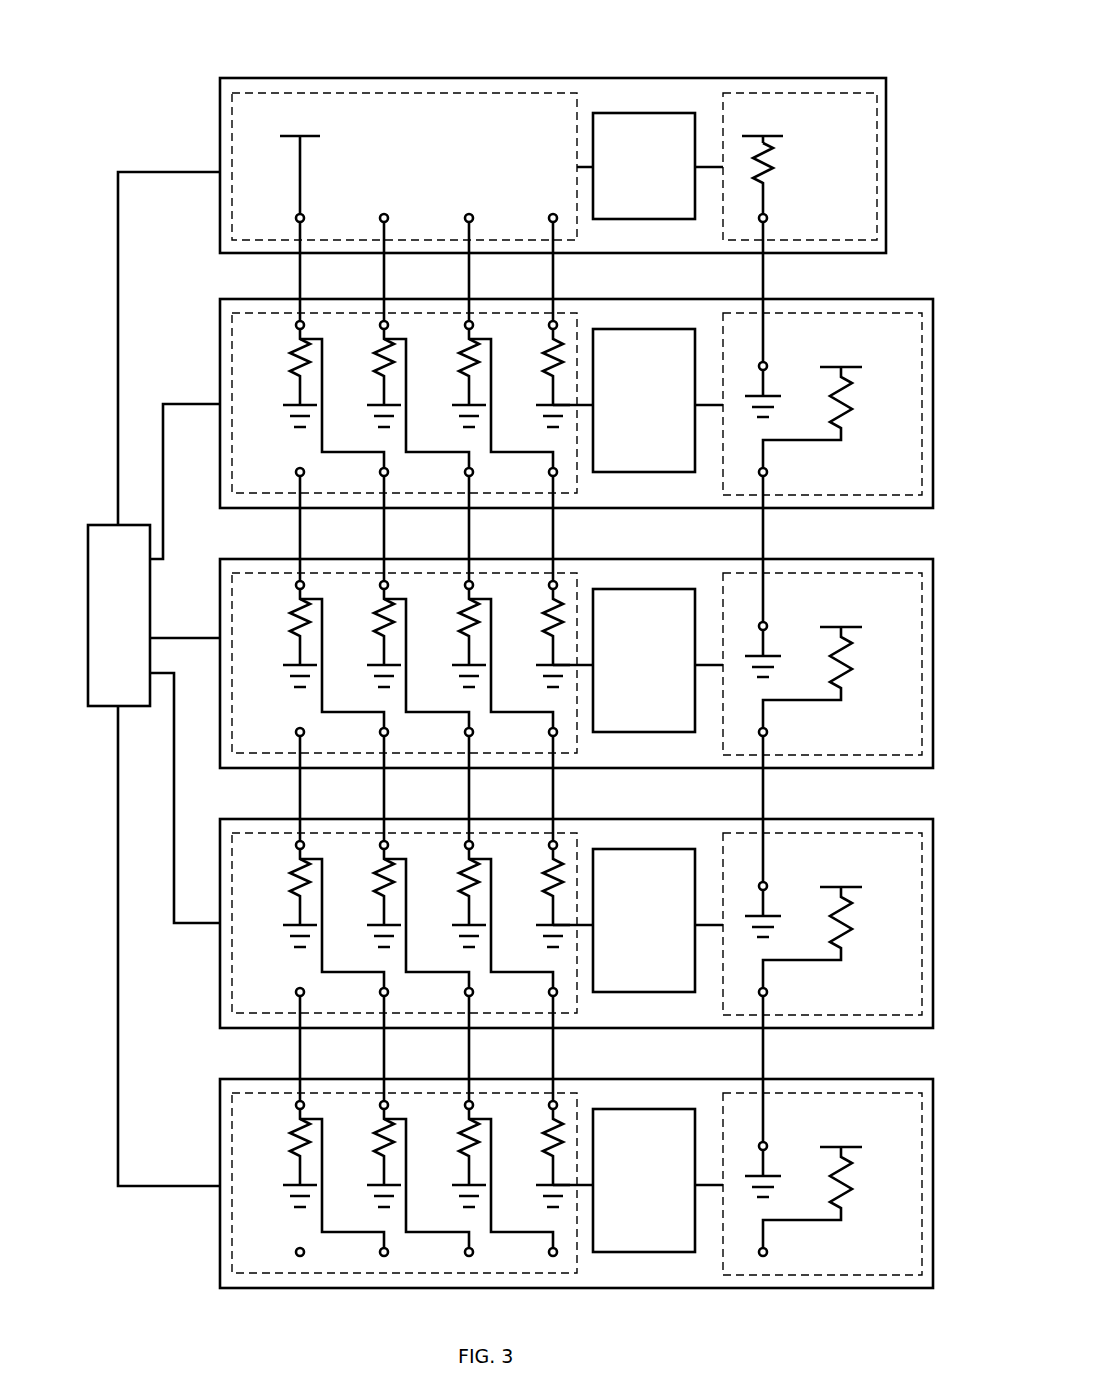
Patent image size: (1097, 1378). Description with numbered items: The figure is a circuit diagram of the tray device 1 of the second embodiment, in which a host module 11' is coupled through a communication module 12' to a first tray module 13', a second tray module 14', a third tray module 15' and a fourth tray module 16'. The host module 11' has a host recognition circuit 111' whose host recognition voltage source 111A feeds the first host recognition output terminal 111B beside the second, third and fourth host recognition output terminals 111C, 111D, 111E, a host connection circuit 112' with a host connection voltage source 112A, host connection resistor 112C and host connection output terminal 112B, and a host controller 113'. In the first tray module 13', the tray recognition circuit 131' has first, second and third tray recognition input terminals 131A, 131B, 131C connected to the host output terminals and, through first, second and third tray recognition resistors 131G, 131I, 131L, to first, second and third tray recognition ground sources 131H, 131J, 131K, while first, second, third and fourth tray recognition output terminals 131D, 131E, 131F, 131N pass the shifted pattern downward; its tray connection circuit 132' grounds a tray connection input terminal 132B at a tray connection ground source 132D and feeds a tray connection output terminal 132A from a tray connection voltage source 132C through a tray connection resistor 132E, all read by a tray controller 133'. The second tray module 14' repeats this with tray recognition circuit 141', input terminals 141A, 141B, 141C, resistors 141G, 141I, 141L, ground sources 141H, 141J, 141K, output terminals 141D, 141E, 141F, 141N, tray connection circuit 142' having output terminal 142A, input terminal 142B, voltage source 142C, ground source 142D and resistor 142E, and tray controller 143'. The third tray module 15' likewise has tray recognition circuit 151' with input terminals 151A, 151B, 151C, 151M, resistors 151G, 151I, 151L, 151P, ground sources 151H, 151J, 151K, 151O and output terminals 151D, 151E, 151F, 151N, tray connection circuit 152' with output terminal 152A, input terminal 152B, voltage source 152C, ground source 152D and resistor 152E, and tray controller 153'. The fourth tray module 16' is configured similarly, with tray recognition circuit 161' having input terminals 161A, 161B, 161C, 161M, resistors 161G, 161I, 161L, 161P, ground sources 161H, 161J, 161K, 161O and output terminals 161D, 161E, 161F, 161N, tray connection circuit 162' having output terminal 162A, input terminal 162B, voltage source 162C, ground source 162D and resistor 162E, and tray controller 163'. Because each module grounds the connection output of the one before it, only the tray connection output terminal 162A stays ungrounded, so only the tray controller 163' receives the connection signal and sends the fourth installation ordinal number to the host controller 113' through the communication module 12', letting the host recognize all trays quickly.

The tray device 1 is at (838, 46).
The host module 11' is at (525, 165).
The host recognition circuit 111' is at (371, 166).
The host recognition voltage source 111A is at (318, 122).
The first host recognition output terminal 111B is at (303, 215).
The second host recognition output terminal 111C is at (386, 214).
The third host recognition output terminal 111D is at (469, 214).
The fourth host recognition output terminal 111E is at (553, 214).
The host connection circuit 112' is at (832, 166).
The host connection voltage source 112A is at (782, 122).
The host connection output terminal 112B is at (767, 218).
The host connection resistor 112C is at (774, 163).
The host controller 113' is at (650, 166).
The communication module 12' is at (105, 594).
The first tray module 13' is at (549, 403).
The tray recognition circuit 131' is at (371, 403).
The first tray recognition input terminal 131A is at (296, 323).
The second tray recognition input terminal 131B is at (380, 323).
The third tray recognition input terminal 131C is at (465, 323).
The first tray recognition resistor 131G is at (290, 360).
The second tray recognition resistor 131I is at (374, 360).
The third tray recognition resistor 131L is at (459, 360).
The first tray recognition ground source 131H is at (288, 416).
The second tray recognition ground source 131J is at (372, 416).
The third tray recognition ground source 131K is at (457, 416).
The first tray recognition output terminal 131D is at (297, 475).
The second tray recognition output terminal 131E is at (380, 472).
The third tray recognition output terminal 131F is at (465, 472).
The fourth tray recognition output terminal 131N is at (549, 472).
The tray connection circuit 132' is at (829, 385).
The tray connection output terminal 132A is at (767, 472).
The tray connection input terminal 132B is at (766, 363).
The tray connection voltage source 132C is at (890, 343).
The tray connection ground source 132D is at (800, 391).
The tray connection resistor 132E is at (852, 398).
The tray controller 133' is at (638, 400).
The second tray module 14' is at (549, 663).
The tray recognition circuit 141' is at (371, 663).
The first tray recognition input terminal 141A is at (296, 583).
The second tray recognition input terminal 141B is at (380, 583).
The third tray recognition input terminal 141C is at (465, 583).
The first tray recognition resistor 141G is at (290, 620).
The second tray recognition resistor 141I is at (374, 620).
The third tray recognition resistor 141L is at (459, 620).
The first tray recognition ground source 141H is at (288, 676).
The second tray recognition ground source 141J is at (372, 676).
The third tray recognition ground source 141K is at (457, 676).
The first tray recognition output terminal 141D is at (297, 735).
The second tray recognition output terminal 141E is at (380, 732).
The third tray recognition output terminal 141F is at (465, 732).
The fourth tray recognition output terminal 141N is at (549, 732).
The tray connection circuit 142' is at (829, 645).
The tray connection output terminal 142A is at (767, 732).
The tray connection input terminal 142B is at (766, 623).
The tray connection voltage source 142C is at (890, 603).
The tray connection ground source 142D is at (800, 651).
The tray connection resistor 142E is at (852, 658).
The tray controller 143' is at (638, 660).
The third tray module 15' is at (549, 923).
The tray recognition circuit 151' is at (371, 923).
The first tray recognition input terminal 151A is at (296, 843).
The second tray recognition input terminal 151B is at (380, 843).
The third tray recognition input terminal 151C is at (465, 843).
The fourth tray recognition input terminal 151M is at (549, 843).
The first tray recognition resistor 151G is at (290, 880).
The second tray recognition resistor 151I is at (374, 880).
The third tray recognition resistor 151L is at (459, 880).
The fourth tray recognition resistor 151P is at (543, 880).
The first tray recognition ground source 151H is at (288, 936).
The second tray recognition ground source 151J is at (372, 936).
The third tray recognition ground source 151K is at (457, 936).
The fourth tray recognition ground source 151O is at (541, 936).
The first tray recognition output terminal 151D is at (297, 995).
The second tray recognition output terminal 151E is at (380, 992).
The third tray recognition output terminal 151F is at (465, 992).
The fourth tray recognition output terminal 151N is at (549, 992).
The tray connection circuit 152' is at (829, 905).
The tray connection output terminal 152A is at (767, 992).
The tray connection input terminal 152B is at (766, 883).
The tray connection voltage source 152C is at (890, 863).
The tray connection ground source 152D is at (800, 911).
The tray connection resistor 152E is at (852, 918).
The tray controller 153' is at (638, 920).
The fourth tray module 16' is at (549, 1183).
The tray recognition circuit 161' is at (371, 1183).
The first tray recognition input terminal 161A is at (296, 1103).
The second tray recognition input terminal 161B is at (380, 1103).
The third tray recognition input terminal 161C is at (465, 1103).
The fourth tray recognition input terminal 161M is at (549, 1103).
The first tray recognition resistor 161G is at (290, 1140).
The second tray recognition resistor 161I is at (374, 1140).
The third tray recognition resistor 161L is at (459, 1140).
The fourth tray recognition resistor 161P is at (543, 1140).
The first tray recognition ground source 161H is at (288, 1196).
The second tray recognition ground source 161J is at (372, 1196).
The third tray recognition ground source 161K is at (457, 1196).
The fourth tray recognition ground source 161O is at (541, 1196).
The first tray recognition output terminal 161D is at (297, 1255).
The second tray recognition output terminal 161E is at (380, 1252).
The third tray recognition output terminal 161F is at (465, 1252).
The fourth tray recognition output terminal 161N is at (549, 1252).
The tray connection circuit 162' is at (829, 1165).
The tray connection output terminal 162A is at (767, 1252).
The tray connection input terminal 162B is at (766, 1143).
The tray connection voltage source 162C is at (890, 1123).
The tray connection ground source 162D is at (800, 1171).
The tray connection resistor 162E is at (852, 1178).
The tray controller 163' is at (638, 1180).